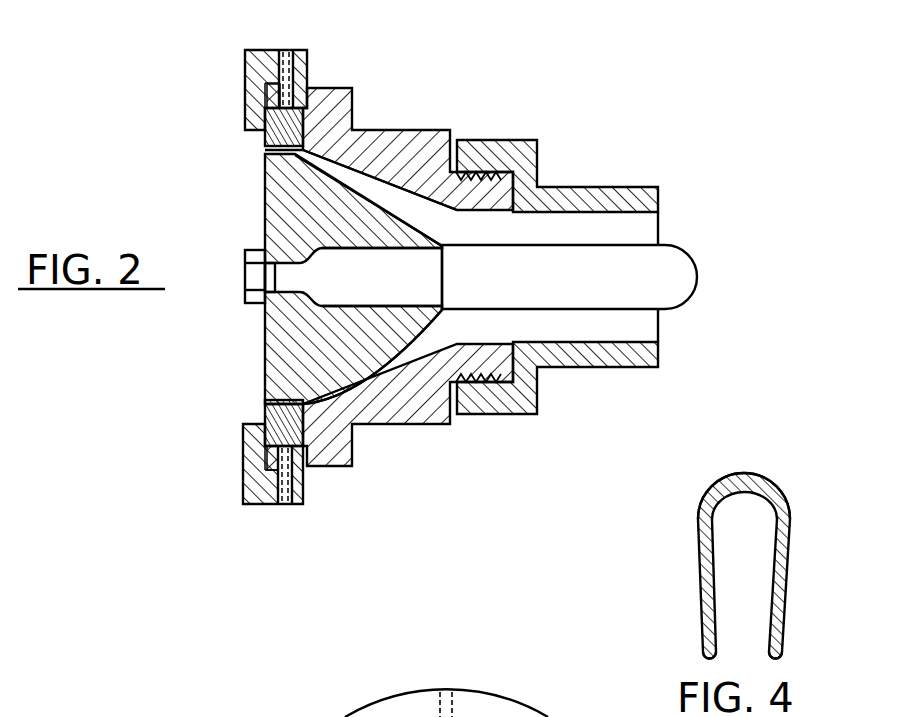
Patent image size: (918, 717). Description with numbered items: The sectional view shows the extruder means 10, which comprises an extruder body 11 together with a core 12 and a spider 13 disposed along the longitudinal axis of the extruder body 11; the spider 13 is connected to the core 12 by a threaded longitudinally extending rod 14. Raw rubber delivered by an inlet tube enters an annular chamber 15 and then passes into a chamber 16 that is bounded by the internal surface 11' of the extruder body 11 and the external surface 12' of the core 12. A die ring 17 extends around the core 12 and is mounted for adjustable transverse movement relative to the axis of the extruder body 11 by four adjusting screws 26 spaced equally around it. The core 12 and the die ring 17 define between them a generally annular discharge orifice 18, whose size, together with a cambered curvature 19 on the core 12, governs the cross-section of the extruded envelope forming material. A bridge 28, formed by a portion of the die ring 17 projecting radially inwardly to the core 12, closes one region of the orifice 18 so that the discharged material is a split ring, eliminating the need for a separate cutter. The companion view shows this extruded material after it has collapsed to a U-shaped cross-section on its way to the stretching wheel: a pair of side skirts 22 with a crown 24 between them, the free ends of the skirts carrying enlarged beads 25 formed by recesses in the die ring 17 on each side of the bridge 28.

In FIG. 2, the extruder means 10 is at (474, 72).
In FIG. 2, the extruder body 11 is at (389, 277).
In FIG. 2, the internal surface of extruder body 11' is at (380, 188).
In FIG. 2, the core 12 is at (321, 279).
In FIG. 2, the external surface of core 12' is at (368, 200).
In FIG. 2, the spider 13 is at (668, 248).
In FIG. 2, the threaded longitudinally extending rod 14 is at (432, 263).
In FIG. 2, the annular chamber 15 is at (611, 241).
In FIG. 2, the chamber 16 is at (393, 200).
In FIG. 2, the die ring 17 is at (266, 137).
In FIG. 2, the discharge orifice 18 is at (265, 150).
In FIG. 2, the cambered curvature 19 is at (418, 350).
In FIG. 4, the side skirts 22 is at (780, 548).
In FIG. 4, the crown 24 is at (717, 488).
In FIG. 4, the enlarged beads 25 is at (703, 650).
In FIG. 2, the adjusting screws 26 is at (289, 58).
In FIG. 2, the bridge 28 is at (265, 405).